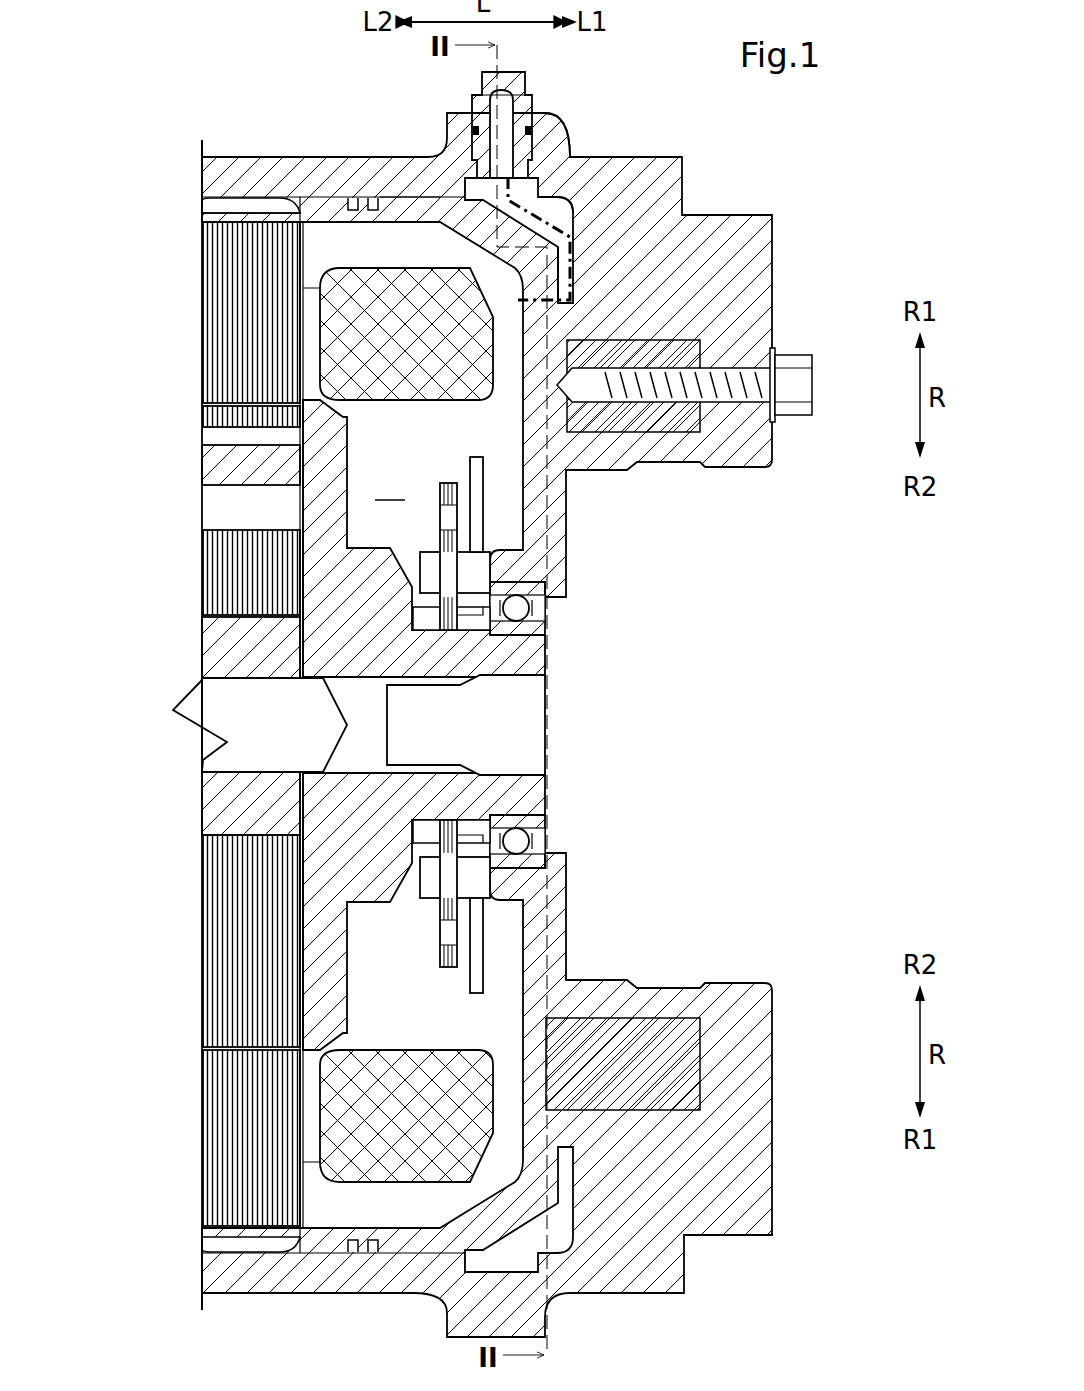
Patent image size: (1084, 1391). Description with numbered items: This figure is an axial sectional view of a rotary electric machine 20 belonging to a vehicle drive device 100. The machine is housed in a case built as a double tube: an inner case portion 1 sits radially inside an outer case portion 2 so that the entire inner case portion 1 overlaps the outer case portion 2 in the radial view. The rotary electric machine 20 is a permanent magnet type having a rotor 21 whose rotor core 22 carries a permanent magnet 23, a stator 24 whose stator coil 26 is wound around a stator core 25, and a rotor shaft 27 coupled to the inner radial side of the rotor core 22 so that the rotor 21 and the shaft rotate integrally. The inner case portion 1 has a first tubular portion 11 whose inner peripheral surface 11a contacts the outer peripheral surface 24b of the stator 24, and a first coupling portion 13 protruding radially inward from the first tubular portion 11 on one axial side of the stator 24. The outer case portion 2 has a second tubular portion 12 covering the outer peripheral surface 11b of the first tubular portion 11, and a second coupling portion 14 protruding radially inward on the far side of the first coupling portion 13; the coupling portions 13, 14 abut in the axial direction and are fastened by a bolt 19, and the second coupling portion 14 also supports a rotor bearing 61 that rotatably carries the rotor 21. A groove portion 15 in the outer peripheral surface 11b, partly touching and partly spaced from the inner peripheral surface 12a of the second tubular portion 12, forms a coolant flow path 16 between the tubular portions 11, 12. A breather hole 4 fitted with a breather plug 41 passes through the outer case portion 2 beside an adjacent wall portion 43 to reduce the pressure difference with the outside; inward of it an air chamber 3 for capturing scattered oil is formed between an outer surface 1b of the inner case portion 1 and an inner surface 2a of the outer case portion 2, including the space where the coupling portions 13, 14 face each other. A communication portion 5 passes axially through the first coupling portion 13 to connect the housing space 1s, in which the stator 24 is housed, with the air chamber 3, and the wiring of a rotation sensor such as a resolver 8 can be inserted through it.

The electric motor unit 100 is at (172, 40).
The rotary electric machine 20 is at (168, 105).
The inner case portion 1 is at (315, 1247).
The outer case portion 2 is at (450, 1327).
The second coupling portion 14 is at (735, 225).
The outer surface 1b is at (562, 266).
The housing space 1s is at (390, 485).
The inner surface 2a is at (552, 215).
The air chamber 3 is at (578, 293).
The breather hole 4 is at (545, 100).
The breather plug 41 is at (478, 82).
The fitting portion 43 is at (547, 160).
The communication portion 5 is at (516, 306).
The terminal 8 is at (415, 925).
The first tubular portion 11 is at (312, 205).
The inner peripheral surface 11a is at (320, 1222).
The outer peripheral surface 11b is at (385, 195).
The second tubular portion 12 is at (235, 165).
The inner peripheral surface 12a is at (345, 213).
The first coupling portion 13 is at (655, 415).
The groove portion 15 is at (260, 212).
The coolant flow path 16 is at (238, 1243).
The bolt 19 is at (812, 395).
The rotor 21 is at (150, 540).
The rotor core 22 is at (215, 905).
The permanent magnet 23 is at (215, 465).
The stator 24 is at (125, 355).
The outer peripheral surface 24b is at (205, 215).
The stator core 25 is at (215, 295).
The stator coil 26 is at (390, 395).
The rotor shaft 27 is at (205, 790).
The rotor bearing 61 is at (548, 625).